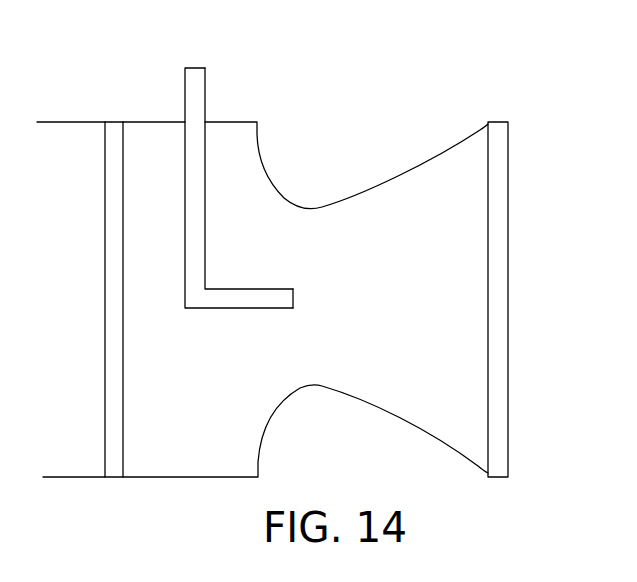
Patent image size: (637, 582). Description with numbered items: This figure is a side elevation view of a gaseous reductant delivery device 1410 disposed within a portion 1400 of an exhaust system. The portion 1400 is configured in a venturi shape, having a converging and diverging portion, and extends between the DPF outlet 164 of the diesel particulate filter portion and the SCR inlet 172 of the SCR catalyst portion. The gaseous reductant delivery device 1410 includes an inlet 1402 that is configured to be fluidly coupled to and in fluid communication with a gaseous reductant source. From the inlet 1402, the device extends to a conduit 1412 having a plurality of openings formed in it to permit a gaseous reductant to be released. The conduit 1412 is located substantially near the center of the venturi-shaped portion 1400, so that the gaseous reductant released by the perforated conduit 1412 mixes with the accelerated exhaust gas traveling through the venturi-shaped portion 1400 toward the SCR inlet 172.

The portion of an exhaust system 1400 is at (348, 103).
The DPF outlet 164 is at (103, 145).
The SCR inlet 172 is at (509, 152).
The inlet 1402 is at (195, 68).
The gaseous reductant delivery device 1410 is at (215, 275).
The conduit 1412 is at (295, 297).